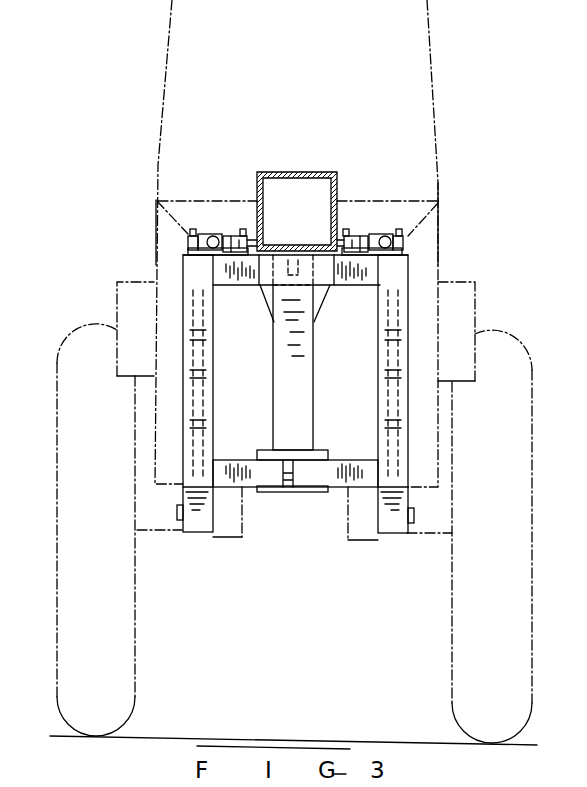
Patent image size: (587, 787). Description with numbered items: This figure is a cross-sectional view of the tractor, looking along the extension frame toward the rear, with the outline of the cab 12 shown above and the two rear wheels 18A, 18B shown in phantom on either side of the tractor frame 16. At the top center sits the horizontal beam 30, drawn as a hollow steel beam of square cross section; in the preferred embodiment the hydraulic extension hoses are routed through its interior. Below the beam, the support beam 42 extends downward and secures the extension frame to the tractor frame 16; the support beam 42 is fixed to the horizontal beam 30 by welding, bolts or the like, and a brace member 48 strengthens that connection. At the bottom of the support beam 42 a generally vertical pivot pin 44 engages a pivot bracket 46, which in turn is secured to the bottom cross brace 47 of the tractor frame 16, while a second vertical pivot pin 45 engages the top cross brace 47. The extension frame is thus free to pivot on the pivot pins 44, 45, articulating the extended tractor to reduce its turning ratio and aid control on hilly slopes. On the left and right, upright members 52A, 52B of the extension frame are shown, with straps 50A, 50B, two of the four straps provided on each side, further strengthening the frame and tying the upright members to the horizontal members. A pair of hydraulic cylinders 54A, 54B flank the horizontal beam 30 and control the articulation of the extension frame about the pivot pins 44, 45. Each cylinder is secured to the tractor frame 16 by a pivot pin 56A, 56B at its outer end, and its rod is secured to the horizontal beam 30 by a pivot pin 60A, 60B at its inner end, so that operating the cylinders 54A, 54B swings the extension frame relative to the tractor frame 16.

The cab 12 is at (313, 52).
The frame 16 is at (222, 536).
The rear wheel 18A is at (137, 603).
The rear wheel 18B is at (450, 648).
The horizontal beam 30 is at (311, 173).
The support beam 42 is at (310, 404).
The pivot pin 44 is at (316, 498).
The second vertical pivot pin 45 is at (319, 306).
The pivot bracket 46 is at (288, 490).
The cross brace 47 is at (353, 288).
The brace member 48 is at (262, 296).
The strap 50A is at (195, 322).
The strap 50B is at (398, 338).
The upright member 52A is at (187, 265).
The upright member 52B is at (406, 275).
The hydraulic cylinder 54A is at (220, 232).
The hydraulic cylinder 54B is at (378, 232).
The pivot pin 56A is at (193, 232).
The pivot pin 56B is at (403, 233).
The pivot pin 60A is at (246, 230).
The pivot pin 60B is at (347, 232).